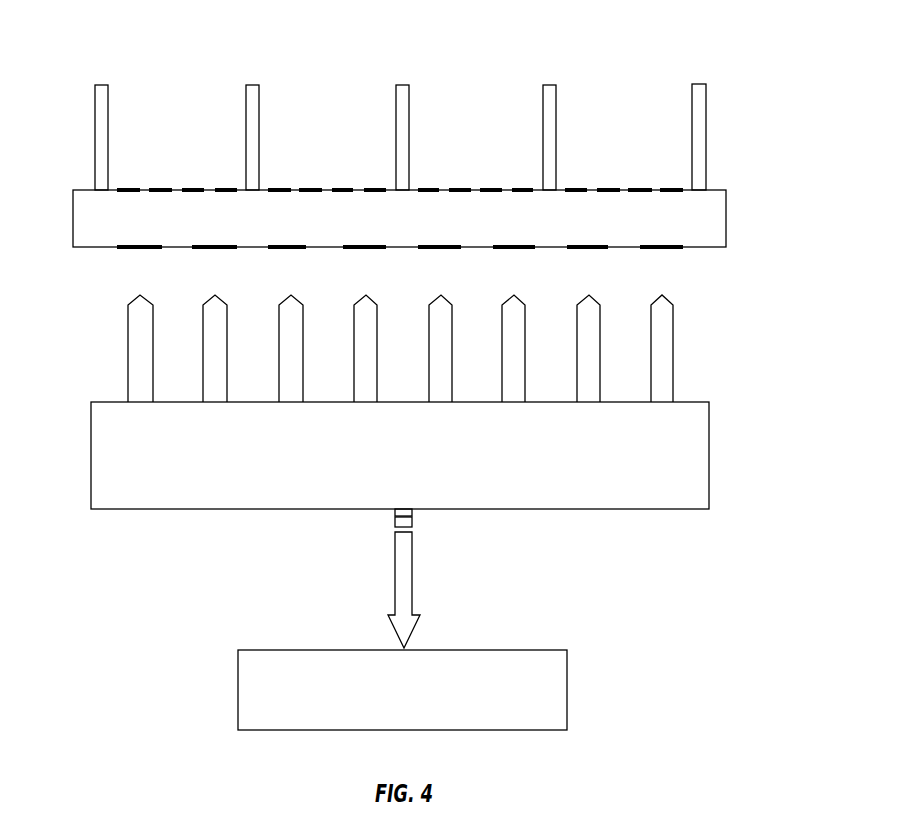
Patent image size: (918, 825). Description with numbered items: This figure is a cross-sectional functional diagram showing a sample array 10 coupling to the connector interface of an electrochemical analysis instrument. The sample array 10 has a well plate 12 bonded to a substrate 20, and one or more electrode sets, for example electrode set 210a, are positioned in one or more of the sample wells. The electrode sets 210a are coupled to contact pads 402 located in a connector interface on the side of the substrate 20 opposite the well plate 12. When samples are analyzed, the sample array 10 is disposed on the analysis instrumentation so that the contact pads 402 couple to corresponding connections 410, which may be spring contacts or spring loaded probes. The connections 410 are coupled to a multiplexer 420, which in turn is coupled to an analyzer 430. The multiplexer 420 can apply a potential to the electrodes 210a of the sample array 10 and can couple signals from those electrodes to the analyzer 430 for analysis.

The sample array 10 is at (702, 55).
The well plate 12 is at (95, 138).
The substrate 20 is at (84, 220).
The electrode set 210a is at (343, 188).
The contact pads 402 is at (587, 247).
The connections 410 is at (128, 358).
The multiplexer 420 is at (710, 455).
The analyzer 430 is at (568, 690).